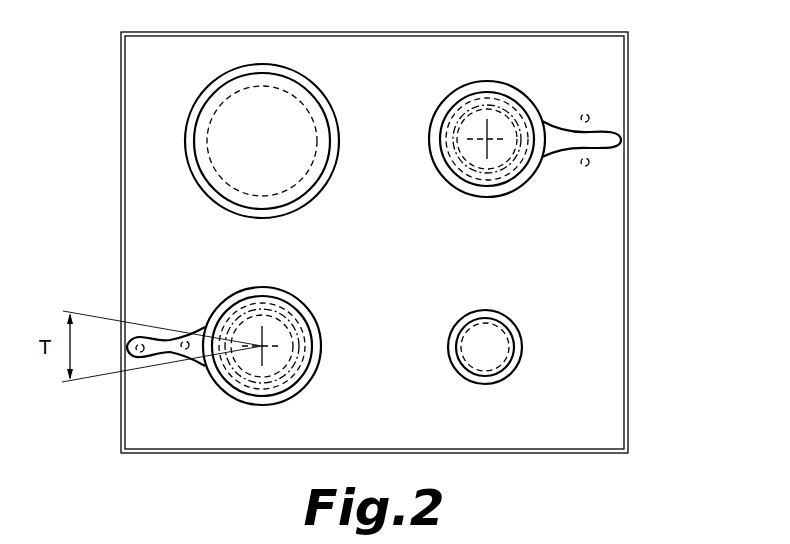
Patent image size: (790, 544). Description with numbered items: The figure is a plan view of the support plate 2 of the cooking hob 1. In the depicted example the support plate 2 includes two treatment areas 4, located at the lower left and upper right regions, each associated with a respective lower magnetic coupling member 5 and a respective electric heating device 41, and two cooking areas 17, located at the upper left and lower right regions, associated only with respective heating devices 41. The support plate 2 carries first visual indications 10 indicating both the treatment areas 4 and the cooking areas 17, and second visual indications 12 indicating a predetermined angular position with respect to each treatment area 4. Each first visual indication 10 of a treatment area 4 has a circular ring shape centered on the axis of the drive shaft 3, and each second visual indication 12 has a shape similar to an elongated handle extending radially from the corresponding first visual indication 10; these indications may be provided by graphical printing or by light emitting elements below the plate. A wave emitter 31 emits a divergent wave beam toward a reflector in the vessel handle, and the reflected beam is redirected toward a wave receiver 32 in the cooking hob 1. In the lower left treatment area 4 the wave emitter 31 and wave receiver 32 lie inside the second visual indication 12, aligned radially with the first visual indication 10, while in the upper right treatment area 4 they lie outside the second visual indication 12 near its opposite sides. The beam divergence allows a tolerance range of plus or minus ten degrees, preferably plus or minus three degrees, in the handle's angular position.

The cooking hob 1 is at (92, 152).
The support plate 2 is at (597, 387).
The drive shaft 3 is at (485, 137).
The treatment area 4 is at (423, 110).
The lower magnetic coupling member 5 is at (470, 180).
The first visual indication 10 is at (198, 97).
The second visual indication 12 is at (555, 152).
The cooking area 17 is at (338, 194).
The wave emitter 31 is at (590, 117).
The wave receiver 32 is at (590, 165).
The electric heating device 41 is at (318, 141).